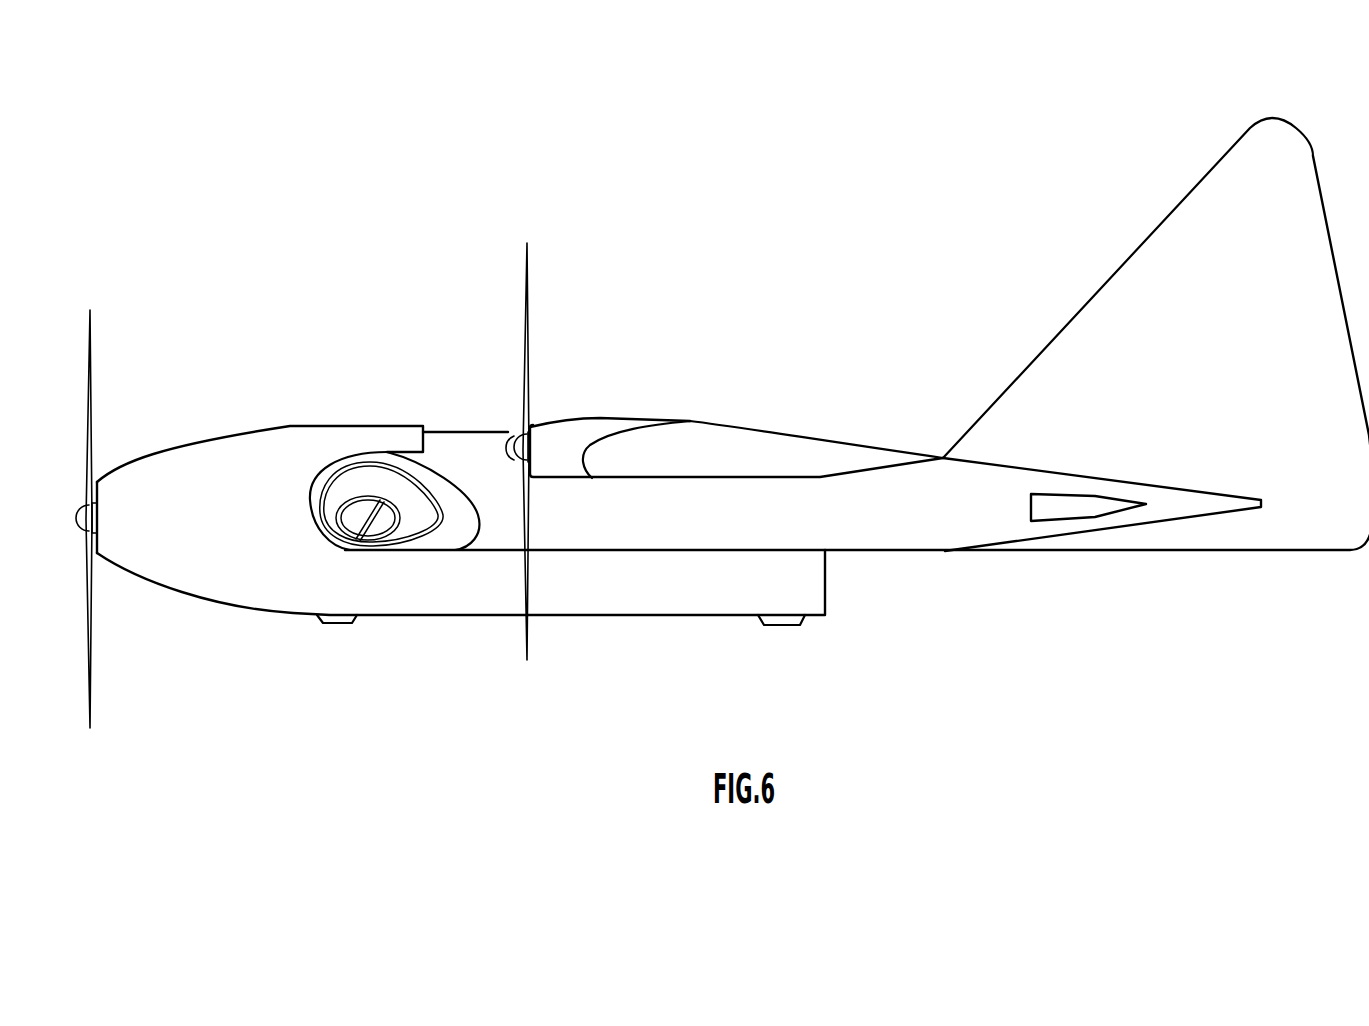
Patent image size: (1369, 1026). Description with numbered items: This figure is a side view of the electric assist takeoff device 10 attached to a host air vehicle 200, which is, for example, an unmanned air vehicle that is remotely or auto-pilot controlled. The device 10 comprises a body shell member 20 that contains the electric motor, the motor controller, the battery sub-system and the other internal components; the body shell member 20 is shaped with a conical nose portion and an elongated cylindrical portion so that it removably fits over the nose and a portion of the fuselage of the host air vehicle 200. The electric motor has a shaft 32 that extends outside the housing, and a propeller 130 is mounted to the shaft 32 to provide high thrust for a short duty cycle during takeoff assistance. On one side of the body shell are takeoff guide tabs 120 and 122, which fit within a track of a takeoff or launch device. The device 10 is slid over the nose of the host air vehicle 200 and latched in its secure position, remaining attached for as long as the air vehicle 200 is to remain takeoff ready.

The takeoff device 10 is at (270, 620).
The body shell member 20 is at (147, 456).
The shaft 32 is at (515, 438).
The propeller 130 is at (92, 645).
The takeoff guide tab 120 is at (335, 625).
The takeoff guide tab 122 is at (780, 628).
The host air vehicle 200 is at (905, 408).